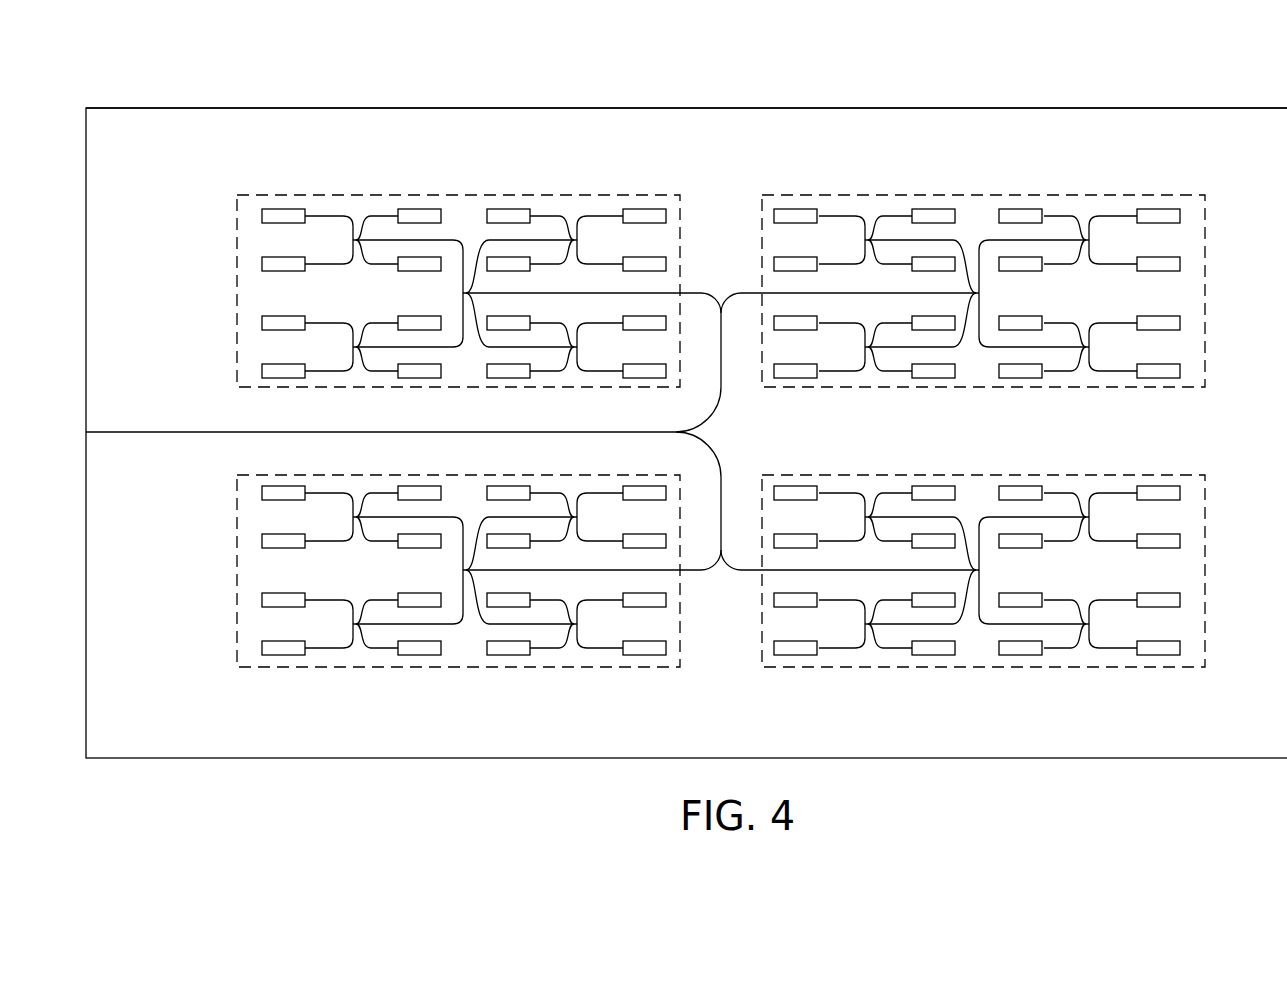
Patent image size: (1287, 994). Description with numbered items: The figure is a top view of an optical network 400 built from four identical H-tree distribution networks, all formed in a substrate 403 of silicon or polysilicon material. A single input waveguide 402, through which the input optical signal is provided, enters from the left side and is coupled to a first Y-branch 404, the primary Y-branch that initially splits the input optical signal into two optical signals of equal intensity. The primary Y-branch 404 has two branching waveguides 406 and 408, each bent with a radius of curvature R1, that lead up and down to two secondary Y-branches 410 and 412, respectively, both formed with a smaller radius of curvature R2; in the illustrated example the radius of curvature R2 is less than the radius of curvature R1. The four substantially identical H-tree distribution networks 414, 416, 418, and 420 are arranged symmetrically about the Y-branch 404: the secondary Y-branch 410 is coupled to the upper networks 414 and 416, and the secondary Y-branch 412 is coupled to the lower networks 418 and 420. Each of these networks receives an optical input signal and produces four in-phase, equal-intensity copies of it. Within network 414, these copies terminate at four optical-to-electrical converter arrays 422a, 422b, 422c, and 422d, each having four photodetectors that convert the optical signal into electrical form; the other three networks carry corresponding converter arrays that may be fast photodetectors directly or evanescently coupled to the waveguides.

The optical network 400 is at (890, 53).
The input waveguide 402 is at (188, 435).
The substrate 403 is at (782, 108).
The first Y-branch 404 is at (703, 433).
The branching waveguide 406 is at (723, 362).
The branching waveguide 408 is at (723, 500).
The secondary Y-branch 410 is at (722, 291).
The secondary Y-branch 412 is at (722, 572).
The H-tree distribution network 414 is at (458, 293).
The H-tree distribution network 416 is at (970, 196).
The H-tree distribution network 418 is at (510, 670).
The H-tree distribution network 420 is at (955, 670).
The optical-to-electrical converter array 422a is at (278, 204).
The optical-to-electrical converter array 422b is at (402, 382).
The optical-to-electrical converter array 422c is at (504, 382).
The optical-to-electrical converter array 422d is at (647, 204).
The radius of curvature R1 is at (702, 412).
The radius of curvature R2 is at (709, 309).